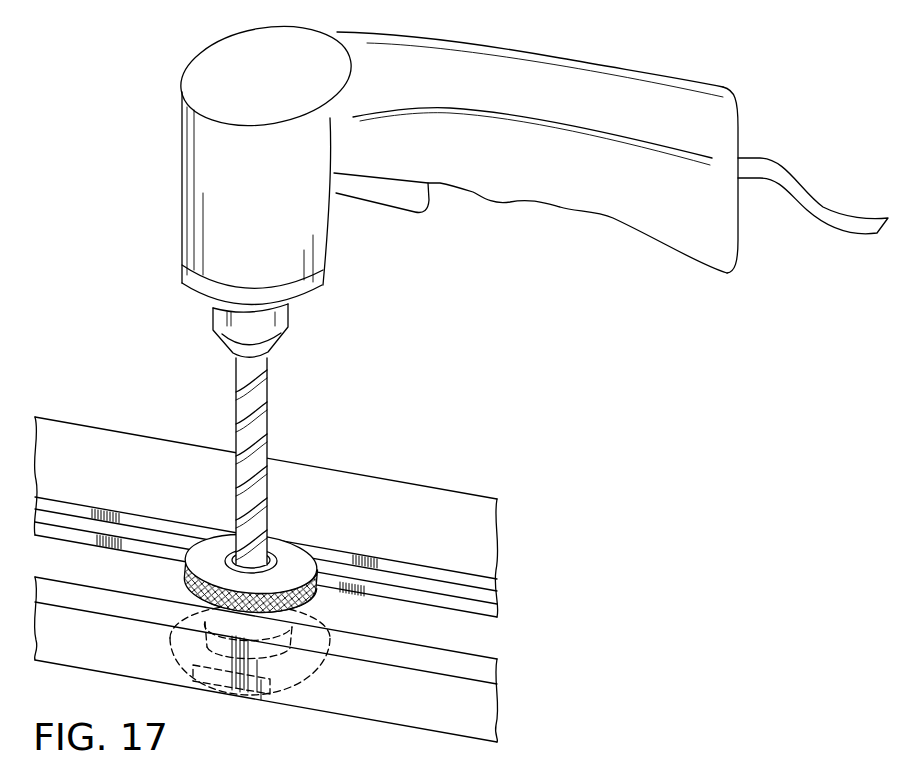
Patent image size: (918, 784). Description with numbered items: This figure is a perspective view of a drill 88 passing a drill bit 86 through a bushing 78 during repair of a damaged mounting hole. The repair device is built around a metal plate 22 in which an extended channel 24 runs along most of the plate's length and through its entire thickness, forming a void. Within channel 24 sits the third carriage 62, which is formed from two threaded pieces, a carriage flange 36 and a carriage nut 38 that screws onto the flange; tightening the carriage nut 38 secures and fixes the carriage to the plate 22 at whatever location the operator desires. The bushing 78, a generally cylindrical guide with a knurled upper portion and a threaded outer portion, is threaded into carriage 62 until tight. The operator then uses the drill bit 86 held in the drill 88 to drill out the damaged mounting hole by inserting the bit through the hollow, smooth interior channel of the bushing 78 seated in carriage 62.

The drill 88 is at (192, 225).
The drill bit 86 is at (268, 417).
The metal plate 22 is at (452, 510).
The extended channel 24 is at (468, 635).
The bushing 78 is at (287, 558).
The carriage nut 38 is at (187, 589).
The third carriage 62 is at (317, 582).
The carriage flange 36 is at (322, 673).